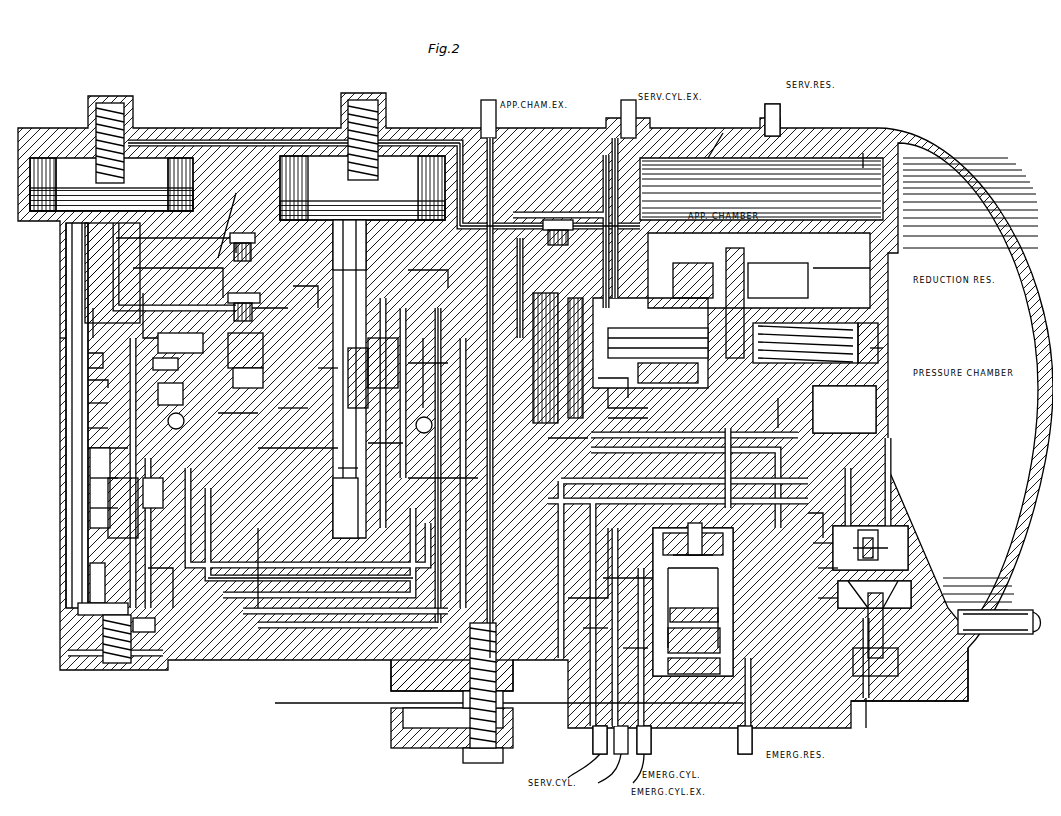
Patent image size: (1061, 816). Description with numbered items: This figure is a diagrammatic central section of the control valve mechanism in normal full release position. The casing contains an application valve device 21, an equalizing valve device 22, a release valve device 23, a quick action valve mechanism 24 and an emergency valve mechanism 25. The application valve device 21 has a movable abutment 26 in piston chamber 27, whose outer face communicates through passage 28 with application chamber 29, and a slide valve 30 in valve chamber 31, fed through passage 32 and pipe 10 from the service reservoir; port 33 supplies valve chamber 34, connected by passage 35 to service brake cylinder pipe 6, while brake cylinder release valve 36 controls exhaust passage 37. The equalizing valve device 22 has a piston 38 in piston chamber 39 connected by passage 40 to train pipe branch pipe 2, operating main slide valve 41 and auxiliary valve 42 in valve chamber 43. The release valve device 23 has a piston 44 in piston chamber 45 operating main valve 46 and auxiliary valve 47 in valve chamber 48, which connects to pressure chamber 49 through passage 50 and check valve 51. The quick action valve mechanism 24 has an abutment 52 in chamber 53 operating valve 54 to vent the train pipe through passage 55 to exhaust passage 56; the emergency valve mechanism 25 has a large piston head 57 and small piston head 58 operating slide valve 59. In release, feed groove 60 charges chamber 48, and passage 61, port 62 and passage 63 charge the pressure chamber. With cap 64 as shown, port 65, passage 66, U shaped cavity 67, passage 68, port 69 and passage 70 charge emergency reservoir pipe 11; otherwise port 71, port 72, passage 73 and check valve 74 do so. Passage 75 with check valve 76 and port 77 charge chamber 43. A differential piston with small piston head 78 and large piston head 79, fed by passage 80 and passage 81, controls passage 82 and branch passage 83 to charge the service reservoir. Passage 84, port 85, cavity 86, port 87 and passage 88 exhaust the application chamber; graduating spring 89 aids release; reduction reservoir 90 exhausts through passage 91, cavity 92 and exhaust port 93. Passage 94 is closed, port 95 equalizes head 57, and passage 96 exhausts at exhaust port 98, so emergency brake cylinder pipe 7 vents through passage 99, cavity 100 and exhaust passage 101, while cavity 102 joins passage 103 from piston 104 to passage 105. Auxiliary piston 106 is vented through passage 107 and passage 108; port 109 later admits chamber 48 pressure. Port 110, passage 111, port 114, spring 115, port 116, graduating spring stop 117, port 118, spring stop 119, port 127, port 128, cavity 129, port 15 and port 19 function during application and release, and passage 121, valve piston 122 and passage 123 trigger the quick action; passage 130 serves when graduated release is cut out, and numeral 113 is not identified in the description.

The train pipe branch pipe 2 is at (999, 620).
The service brake cylinder pipe 6 is at (585, 730).
The emergency brake cylinder pipe 7 is at (643, 728).
The service reservoir pipe 10 is at (772, 110).
The emergency reservoir pipe 11 is at (730, 728).
The service port 15 is at (97, 488).
The port 19 is at (100, 520).
The application valve device 21 is at (658, 345).
The equalizing valve device 22 is at (112, 273).
The release valve device 23 is at (349, 245).
The quick action valve mechanism 24 is at (874, 619).
The emergency valve mechanism 25 is at (693, 602).
The movable abutment 26 is at (558, 358).
The piston chamber 27 is at (625, 400).
The passage 28 is at (590, 215).
The application chamber 29 is at (855, 152).
The slide valve 30 is at (767, 303).
The valve chamber 31 is at (810, 283).
The passage 32 is at (718, 150).
The port 33 is at (693, 280).
The valve chamber 34 is at (810, 320).
The passage 35 is at (765, 400).
The brake cylinder release valve 36 is at (668, 365).
The exhaust passage 37 is at (603, 142).
The piston 38 is at (120, 182).
The piston chamber 39 is at (95, 165).
The passage 40 is at (128, 133).
The main slide valve 41 is at (58, 266).
The auxiliary valve 42 is at (80, 352).
The valve chamber 43 is at (60, 296).
The piston 44 is at (312, 195).
The piston chamber 45 is at (395, 150).
The main valve 46 is at (353, 401).
The auxiliary valve 47 is at (348, 340).
The valve chamber 48 is at (320, 443).
The pressure chamber 49 is at (890, 388).
The passage 50 is at (480, 213).
The check valve 51 is at (548, 212).
The movable abutment 52 is at (815, 565).
The chamber 53 is at (815, 598).
The valve 54 is at (890, 660).
The passage 55 is at (955, 660).
The exhaust passage 56 is at (845, 700).
The large piston head 57 is at (720, 535).
The small piston head 58 is at (715, 660).
The slide valve 59 is at (700, 635).
The feed groove 60 is at (445, 205).
The passage 61 is at (272, 400).
The port 62 is at (168, 363).
The passage 63 is at (505, 260).
The cap 64 is at (495, 683).
The port 65 is at (354, 399).
The passage 66 is at (428, 271).
The U shaped cavity 67 is at (383, 678).
The passage 68 is at (318, 657).
The port 69 is at (140, 310).
The passage 70 is at (790, 690).
The port 71 is at (56, 333).
The port 72 is at (92, 323).
The passage 73 is at (170, 262).
The check valve 74 is at (238, 300).
The passage 75 is at (212, 248).
The check valve 76 is at (706, 692).
The port 77 is at (150, 230).
The small piston head 78 is at (254, 350).
The large piston head 79 is at (250, 375).
The passage 80 is at (242, 421).
The passage 81 is at (185, 343).
The passage 82 is at (300, 278).
The branch passage 83 is at (438, 361).
The passage 84 is at (443, 478).
The port 85 is at (375, 437).
The cavity 86 is at (325, 375).
The port 87 is at (378, 330).
The passage 88 is at (486, 150).
The graduating spring 89 is at (870, 325).
The reduction reservoir 90 is at (870, 352).
The passage 91 is at (215, 530).
The cavity 92 is at (100, 441).
The exhaust port 93 is at (177, 414).
The passage 94 is at (710, 487).
The port 95 is at (622, 548).
The passage 96 is at (428, 371).
The exhaust port 98 is at (422, 410).
The passage 99 is at (630, 655).
The cavity 100 is at (694, 614).
The exhaust passage 101 is at (599, 626).
The cavity 102 is at (693, 545).
The passage 103 is at (610, 511).
The piston 104 is at (592, 378).
The passage 105 is at (628, 572).
The auxiliary piston 106 is at (70, 600).
The passage 107 is at (135, 623).
The passage 108 is at (310, 591).
The port 109 is at (350, 469).
The port 110 is at (82, 375).
The passage 111 is at (168, 548).
The passage 113 is at (167, 493).
The port 114 is at (82, 503).
The spring 115 is at (108, 655).
The port 116 is at (80, 574).
The graduating spring stop 117 is at (100, 95).
The port 118 is at (82, 479).
The spring stop 119 is at (372, 105).
The passage 121 is at (800, 540).
The valve piston 122 is at (880, 545).
The passage 123 is at (808, 524).
The port 127 is at (348, 508).
The port 128 is at (85, 422).
The cavity 129 is at (85, 397).
The passage 130 is at (440, 330).